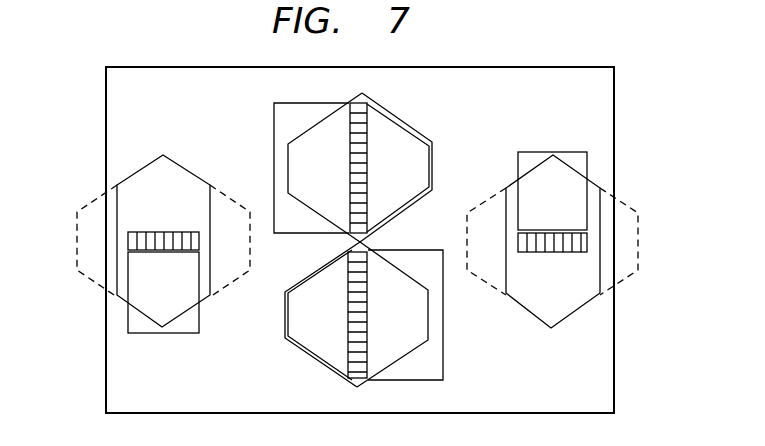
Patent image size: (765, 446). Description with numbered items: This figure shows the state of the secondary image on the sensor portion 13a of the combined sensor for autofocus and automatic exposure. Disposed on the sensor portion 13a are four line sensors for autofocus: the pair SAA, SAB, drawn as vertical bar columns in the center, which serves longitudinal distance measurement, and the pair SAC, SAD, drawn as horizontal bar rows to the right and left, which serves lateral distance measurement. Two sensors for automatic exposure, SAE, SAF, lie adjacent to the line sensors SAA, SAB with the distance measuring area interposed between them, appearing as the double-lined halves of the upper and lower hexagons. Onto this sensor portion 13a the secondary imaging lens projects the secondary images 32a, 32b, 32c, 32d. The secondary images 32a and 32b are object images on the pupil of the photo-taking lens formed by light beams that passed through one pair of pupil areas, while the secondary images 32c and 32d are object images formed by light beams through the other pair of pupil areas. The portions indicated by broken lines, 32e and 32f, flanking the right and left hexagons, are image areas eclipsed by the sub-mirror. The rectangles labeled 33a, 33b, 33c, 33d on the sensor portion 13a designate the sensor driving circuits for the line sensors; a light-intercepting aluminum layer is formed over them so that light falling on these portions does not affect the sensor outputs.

The sensor portion 13a is at (622, 384).
The secondary image 32a is at (288, 143).
The secondary image 32b is at (415, 352).
The secondary image 32c is at (587, 305).
The secondary image 32d is at (138, 315).
The eclipsed image area 32e is at (638, 241).
The eclipsed image area 32f is at (77, 232).
The sensor driving circuit 33a is at (274, 192).
The sensor driving circuit 33b is at (445, 343).
The sensor driving circuit 33c is at (533, 152).
The sensor driving circuit 33d is at (162, 333).
The line sensor for AF SAA is at (350, 127).
The line sensor for AF SAB is at (366, 358).
The line sensor for AF SAC is at (548, 233).
The line sensor for AF SAD is at (168, 232).
The sensor for AE SAE is at (395, 132).
The sensor for AE SAF is at (317, 338).